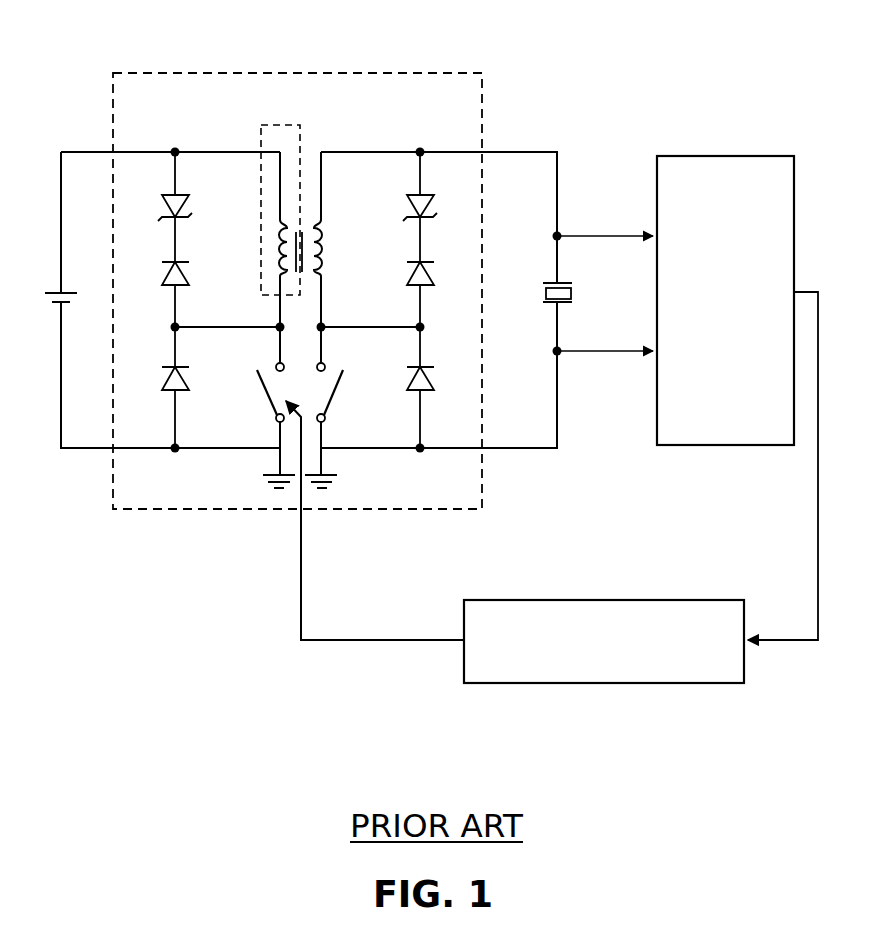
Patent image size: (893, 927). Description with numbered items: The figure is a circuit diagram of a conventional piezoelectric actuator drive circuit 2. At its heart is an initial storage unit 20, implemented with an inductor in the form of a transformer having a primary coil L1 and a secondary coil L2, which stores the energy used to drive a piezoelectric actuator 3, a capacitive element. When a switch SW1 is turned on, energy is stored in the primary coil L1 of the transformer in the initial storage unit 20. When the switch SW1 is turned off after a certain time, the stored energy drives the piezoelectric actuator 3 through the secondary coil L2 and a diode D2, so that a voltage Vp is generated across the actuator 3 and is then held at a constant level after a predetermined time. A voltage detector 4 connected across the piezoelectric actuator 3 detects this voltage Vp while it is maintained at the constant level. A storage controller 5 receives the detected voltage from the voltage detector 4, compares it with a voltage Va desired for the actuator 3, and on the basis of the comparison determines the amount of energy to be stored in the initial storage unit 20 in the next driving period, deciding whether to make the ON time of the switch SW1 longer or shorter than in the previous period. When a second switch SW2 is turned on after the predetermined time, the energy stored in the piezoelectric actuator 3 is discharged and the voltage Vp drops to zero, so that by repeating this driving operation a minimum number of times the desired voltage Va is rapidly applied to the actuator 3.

The piezoelectric actuator drive circuit 2 is at (260, 73).
The initial storage unit 20 is at (297, 214).
The primary coil L1 is at (271, 268).
The secondary coil L2 is at (330, 268).
The switch SW1 is at (266, 393).
The switch SW2 is at (335, 393).
The diode D2 is at (440, 407).
The piezoelectric actuator 3 is at (563, 305).
The voltage detector 4 is at (669, 156).
The storage controller 5 is at (602, 601).